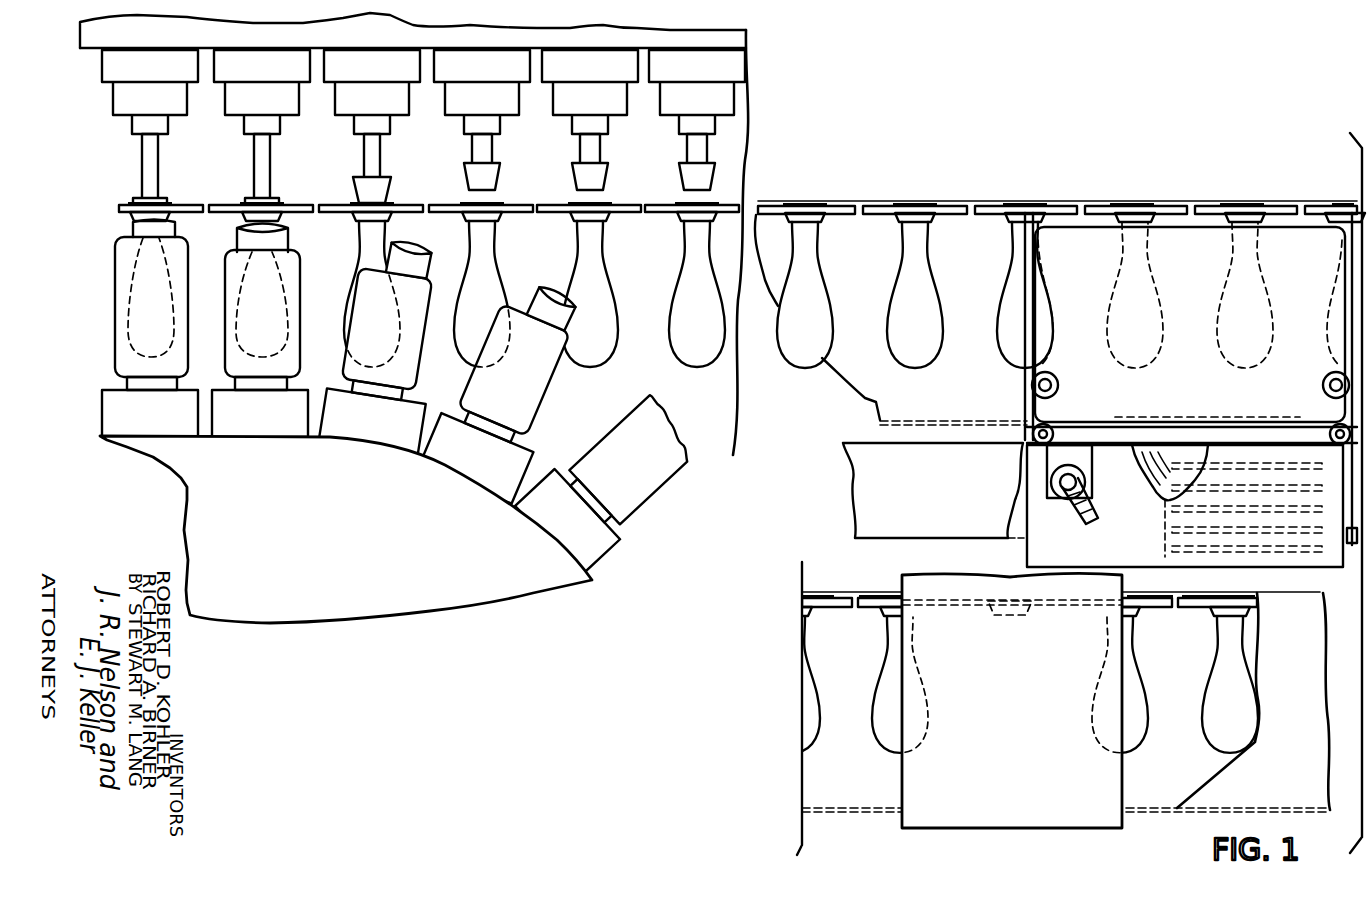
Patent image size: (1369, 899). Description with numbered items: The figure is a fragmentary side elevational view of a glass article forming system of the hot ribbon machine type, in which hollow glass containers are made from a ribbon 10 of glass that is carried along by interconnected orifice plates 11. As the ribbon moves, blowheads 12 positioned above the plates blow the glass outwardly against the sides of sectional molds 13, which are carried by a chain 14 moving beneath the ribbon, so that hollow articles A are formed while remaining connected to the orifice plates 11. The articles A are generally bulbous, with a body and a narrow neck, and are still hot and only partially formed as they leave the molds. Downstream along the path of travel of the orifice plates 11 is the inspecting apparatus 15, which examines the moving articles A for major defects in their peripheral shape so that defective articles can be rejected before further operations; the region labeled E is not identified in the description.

The ribbon of glass 10 is at (130, 202).
The orifice plates 11 is at (190, 209).
The blowheads 12 is at (147, 155).
The sectional molds 13 is at (118, 268).
The chain 14 is at (371, 427).
The inspecting apparatus 15 is at (992, 458).
The hollow articles A is at (600, 352).
The enclosure E is at (937, 839).